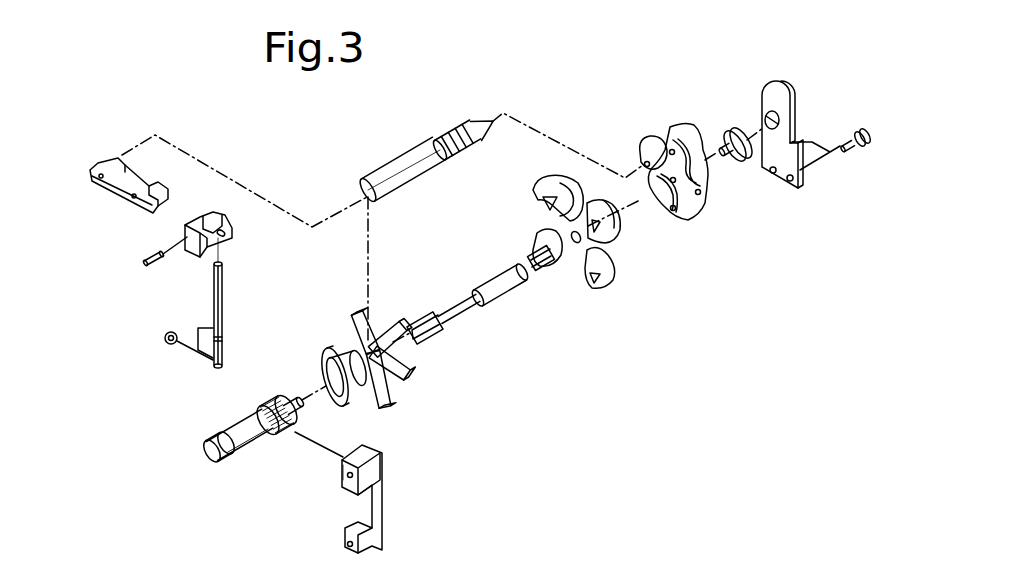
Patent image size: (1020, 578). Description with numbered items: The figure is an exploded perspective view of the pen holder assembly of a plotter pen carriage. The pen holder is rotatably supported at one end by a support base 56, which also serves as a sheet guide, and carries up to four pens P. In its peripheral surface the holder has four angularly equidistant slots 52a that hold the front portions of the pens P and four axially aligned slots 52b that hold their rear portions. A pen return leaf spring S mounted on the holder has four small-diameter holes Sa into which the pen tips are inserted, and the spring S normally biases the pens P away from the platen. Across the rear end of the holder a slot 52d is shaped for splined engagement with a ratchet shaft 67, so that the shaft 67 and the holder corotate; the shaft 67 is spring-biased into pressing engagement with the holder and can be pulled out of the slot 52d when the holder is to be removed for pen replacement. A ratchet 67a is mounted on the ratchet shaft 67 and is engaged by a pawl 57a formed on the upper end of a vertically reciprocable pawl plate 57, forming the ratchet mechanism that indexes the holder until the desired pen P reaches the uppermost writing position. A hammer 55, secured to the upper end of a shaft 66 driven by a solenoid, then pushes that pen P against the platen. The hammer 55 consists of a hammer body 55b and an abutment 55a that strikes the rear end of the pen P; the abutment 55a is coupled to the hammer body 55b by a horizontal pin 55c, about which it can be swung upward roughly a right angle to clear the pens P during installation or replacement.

The hammer 55 is at (178, 200).
The abutment 55a is at (120, 192).
The hammer body 55b is at (222, 216).
The horizontal pin 55c is at (153, 267).
The shaft 66 is at (213, 288).
The pen P is at (397, 163).
The slots 52a is at (538, 205).
The slots 52b is at (340, 336).
The slot 52d is at (340, 402).
The ratchet shaft 67 is at (233, 430).
The ratchet 67a is at (262, 397).
The pawl plate 57 is at (380, 500).
The pawl 57a is at (343, 467).
The return leaf spring S is at (648, 140).
The small-diameter holes Sa is at (677, 138).
The support base 56 is at (788, 96).